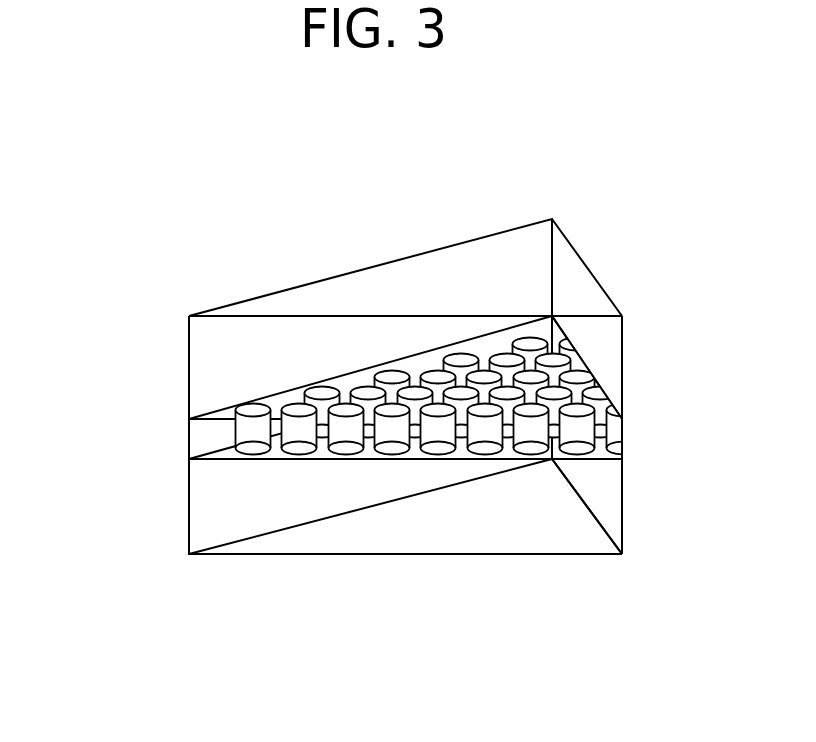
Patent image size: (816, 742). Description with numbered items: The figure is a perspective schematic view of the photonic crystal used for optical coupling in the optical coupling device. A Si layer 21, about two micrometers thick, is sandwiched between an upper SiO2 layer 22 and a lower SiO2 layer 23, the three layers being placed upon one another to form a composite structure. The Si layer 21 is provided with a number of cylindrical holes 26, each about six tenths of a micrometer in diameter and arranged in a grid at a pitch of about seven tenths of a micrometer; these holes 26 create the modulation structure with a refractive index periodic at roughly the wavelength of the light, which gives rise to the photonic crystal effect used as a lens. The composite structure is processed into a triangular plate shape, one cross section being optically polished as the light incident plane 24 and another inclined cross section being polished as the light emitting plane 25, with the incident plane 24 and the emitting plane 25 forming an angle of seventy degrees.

The Si layer 21 is at (202, 443).
The upper SiO2 layer 22 is at (202, 353).
The lower SiO2 layer 23 is at (217, 528).
The light incident plane 24 is at (417, 433).
The light emitting plane 25 is at (625, 428).
The holes 26 is at (439, 421).